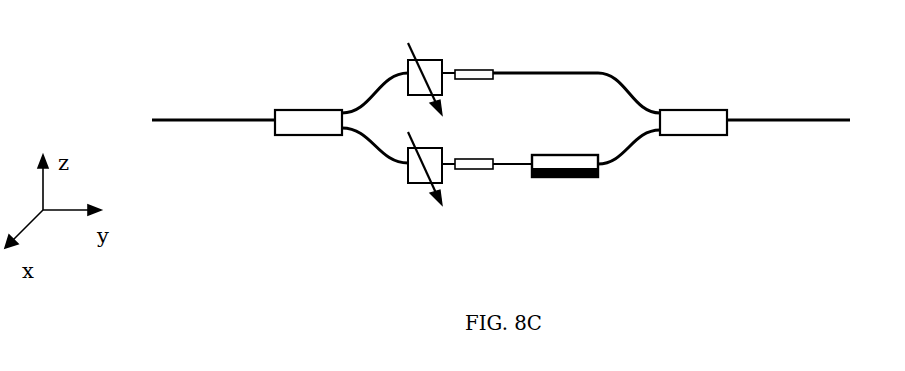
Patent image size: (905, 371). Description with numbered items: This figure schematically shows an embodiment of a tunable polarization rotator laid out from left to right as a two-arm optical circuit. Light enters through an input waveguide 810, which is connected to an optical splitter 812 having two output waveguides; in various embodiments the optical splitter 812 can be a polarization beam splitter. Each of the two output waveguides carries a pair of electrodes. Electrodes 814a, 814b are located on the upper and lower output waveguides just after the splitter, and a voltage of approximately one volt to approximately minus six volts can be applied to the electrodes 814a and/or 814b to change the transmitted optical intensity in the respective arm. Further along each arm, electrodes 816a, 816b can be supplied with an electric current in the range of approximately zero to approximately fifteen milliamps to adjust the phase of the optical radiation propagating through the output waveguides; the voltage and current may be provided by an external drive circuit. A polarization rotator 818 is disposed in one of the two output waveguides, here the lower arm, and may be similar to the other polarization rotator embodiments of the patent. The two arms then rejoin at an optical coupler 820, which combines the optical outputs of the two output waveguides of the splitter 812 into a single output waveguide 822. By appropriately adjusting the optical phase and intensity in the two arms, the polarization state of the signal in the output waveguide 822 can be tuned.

The input waveguide 810 is at (203, 128).
The optical splitter 812 is at (308, 135).
The electrode 814a is at (443, 90).
The electrode 814b is at (422, 185).
The electrode 816a is at (485, 80).
The electrode 816b is at (467, 177).
The polarization rotator 818 is at (567, 178).
The optical coupler 820 is at (690, 135).
The output waveguide 822 is at (770, 128).